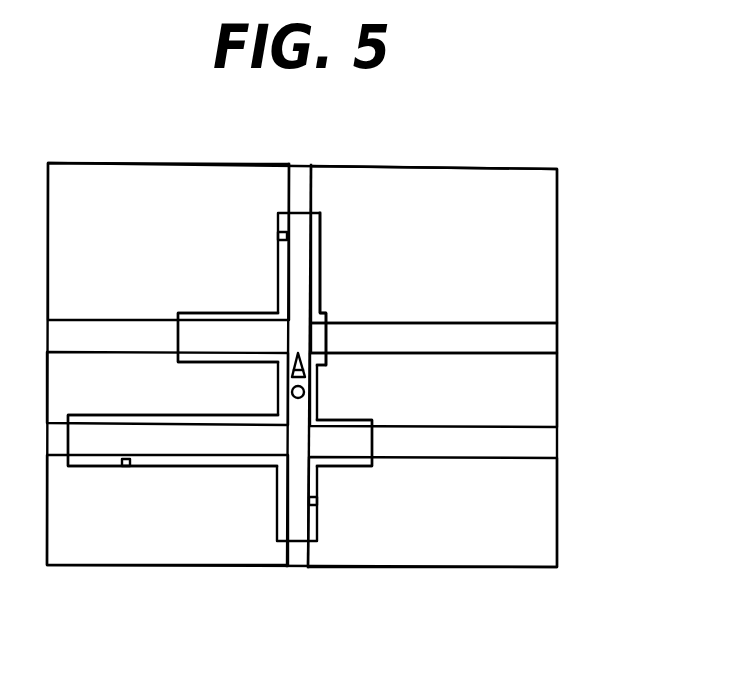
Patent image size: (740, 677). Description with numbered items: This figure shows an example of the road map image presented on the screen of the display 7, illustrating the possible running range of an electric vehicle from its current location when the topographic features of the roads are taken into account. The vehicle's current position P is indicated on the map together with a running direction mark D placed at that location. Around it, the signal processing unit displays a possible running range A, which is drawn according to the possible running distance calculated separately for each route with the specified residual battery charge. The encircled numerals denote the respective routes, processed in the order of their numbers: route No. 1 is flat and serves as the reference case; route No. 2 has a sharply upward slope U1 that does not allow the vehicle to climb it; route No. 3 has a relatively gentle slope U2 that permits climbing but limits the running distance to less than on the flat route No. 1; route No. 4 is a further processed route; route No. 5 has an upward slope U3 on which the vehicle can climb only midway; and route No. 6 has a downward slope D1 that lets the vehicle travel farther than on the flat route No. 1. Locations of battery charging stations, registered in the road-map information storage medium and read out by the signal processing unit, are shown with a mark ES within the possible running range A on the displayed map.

The display 7 is at (339, 365).
The route No. 1 is at (434, 244).
The route No. 2 is at (339, 289).
The route No. 3 is at (168, 241).
The route No. 4 is at (432, 512).
The route No. 5 is at (433, 390).
The route No. 6 is at (167, 388).
The possible running range A is at (160, 467).
The sharply upward slope U1 is at (342, 289).
The relatively gentle slope U2 is at (228, 337).
The upward slope U3 is at (344, 443).
The downward slope D1 is at (173, 440).
The battery charging station mark ES is at (228, 369).
The current position P is at (292, 392).
The running direction mark D is at (318, 372).